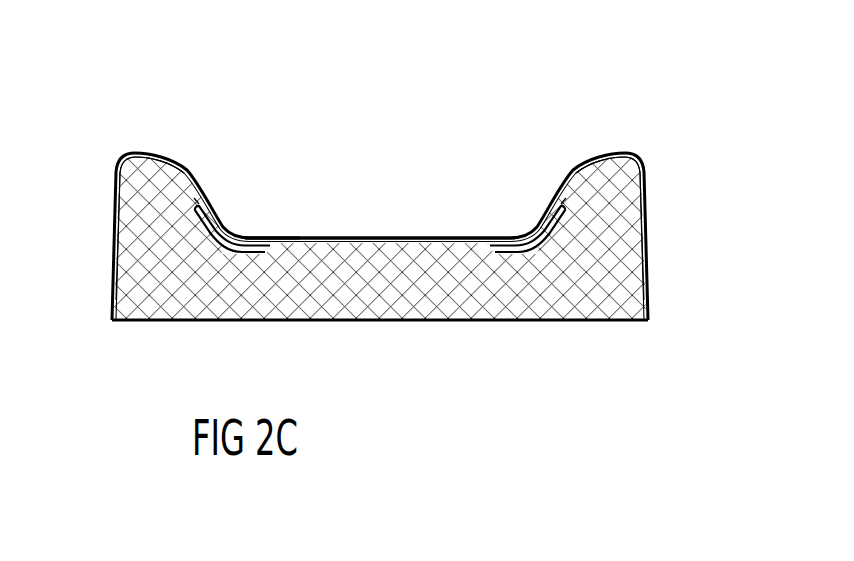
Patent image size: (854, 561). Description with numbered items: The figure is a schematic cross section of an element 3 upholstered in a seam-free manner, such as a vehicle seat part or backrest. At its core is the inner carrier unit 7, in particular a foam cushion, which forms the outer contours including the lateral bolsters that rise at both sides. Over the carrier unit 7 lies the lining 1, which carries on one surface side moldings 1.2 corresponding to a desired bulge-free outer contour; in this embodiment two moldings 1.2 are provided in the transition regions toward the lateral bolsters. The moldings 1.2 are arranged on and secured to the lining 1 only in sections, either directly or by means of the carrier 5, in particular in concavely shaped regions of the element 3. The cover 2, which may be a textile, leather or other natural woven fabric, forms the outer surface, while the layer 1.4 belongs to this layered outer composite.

The lining 1 is at (455, 236).
The molding 1.2 is at (194, 216).
The coating layer 1.4 is at (178, 201).
The cover 2 is at (270, 237).
The element 3 is at (388, 215).
The carrier 5 is at (205, 188).
The carrier unit 7 is at (370, 310).